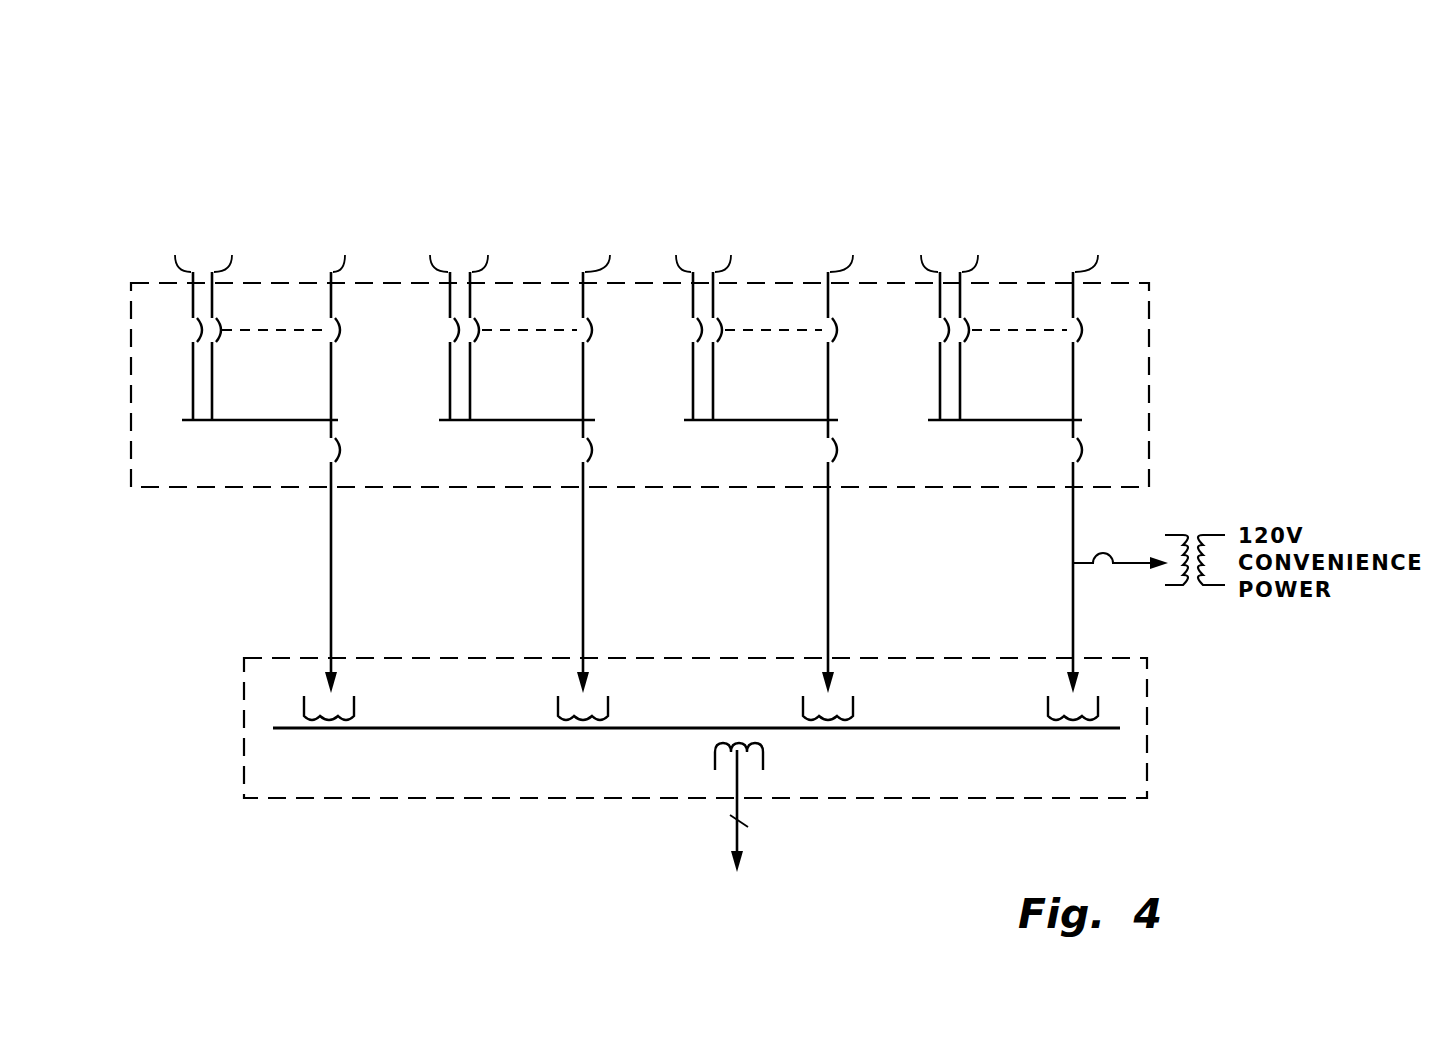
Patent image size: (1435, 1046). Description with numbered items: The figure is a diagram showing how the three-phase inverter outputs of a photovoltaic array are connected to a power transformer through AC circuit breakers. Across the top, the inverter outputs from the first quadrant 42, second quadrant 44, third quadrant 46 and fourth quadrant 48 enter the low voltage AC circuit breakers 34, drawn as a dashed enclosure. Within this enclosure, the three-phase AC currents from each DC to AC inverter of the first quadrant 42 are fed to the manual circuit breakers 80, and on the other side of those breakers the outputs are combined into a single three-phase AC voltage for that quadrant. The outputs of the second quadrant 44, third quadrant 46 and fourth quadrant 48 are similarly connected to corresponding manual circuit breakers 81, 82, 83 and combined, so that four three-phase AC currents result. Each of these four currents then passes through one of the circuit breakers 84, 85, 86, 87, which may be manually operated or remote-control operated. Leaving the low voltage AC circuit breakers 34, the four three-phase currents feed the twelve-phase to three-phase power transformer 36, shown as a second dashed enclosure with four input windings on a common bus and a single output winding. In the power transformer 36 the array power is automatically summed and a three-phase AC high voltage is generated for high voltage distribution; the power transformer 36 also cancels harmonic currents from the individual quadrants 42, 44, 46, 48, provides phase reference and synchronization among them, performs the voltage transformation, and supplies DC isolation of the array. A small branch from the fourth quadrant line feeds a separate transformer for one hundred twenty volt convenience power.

The low voltage AC circuit breakers 34 is at (130, 390).
The 12-phase to 3-phase power transformer 36 is at (243, 732).
The first quadrant 42 is at (255, 198).
The second quadrant 44 is at (514, 198).
The third quadrant 46 is at (758, 198).
The fourth quadrant 48 is at (1002, 198).
The manual circuit breakers 80 is at (352, 330).
The circuit breakers for 2nd quadrant inverter outputs 81 is at (610, 330).
The circuit breakers for 3rd quadrant inverter outputs 82 is at (855, 330).
The circuit breakers for 4th quadrant inverter outputs 83 is at (1097, 330).
The circuit breaker 84 is at (340, 450).
The circuit breaker 85 is at (592, 450).
The circuit breaker 86 is at (837, 450).
The circuit breaker 87 is at (1082, 450).